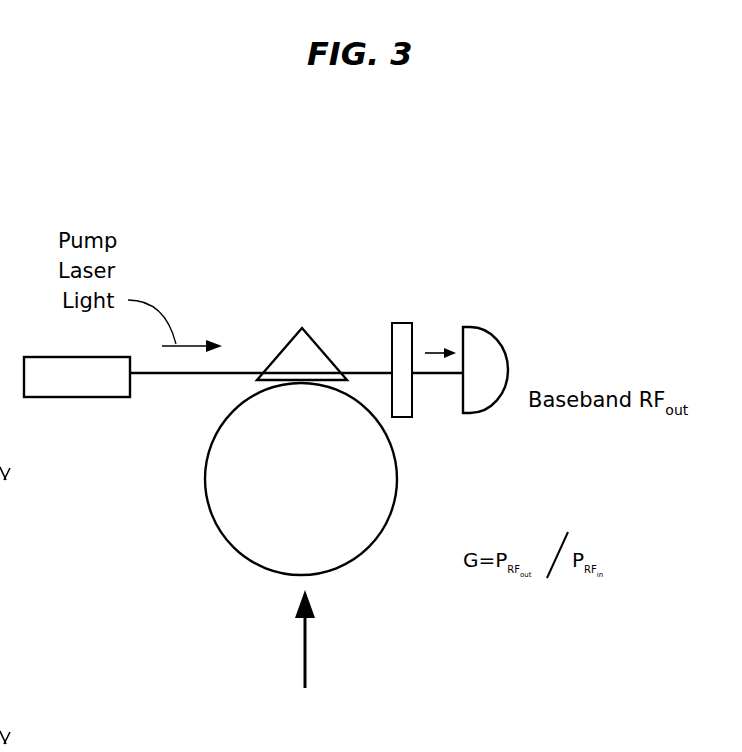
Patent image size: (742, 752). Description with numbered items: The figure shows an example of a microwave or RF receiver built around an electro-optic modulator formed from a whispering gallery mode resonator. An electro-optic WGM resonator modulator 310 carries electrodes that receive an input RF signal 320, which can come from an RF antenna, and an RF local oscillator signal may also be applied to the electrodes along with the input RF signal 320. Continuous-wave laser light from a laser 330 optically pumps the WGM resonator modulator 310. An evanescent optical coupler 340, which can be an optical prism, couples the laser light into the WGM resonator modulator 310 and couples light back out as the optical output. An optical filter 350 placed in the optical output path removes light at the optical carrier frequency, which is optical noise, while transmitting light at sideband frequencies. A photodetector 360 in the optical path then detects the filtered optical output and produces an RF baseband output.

The electro-optic WGM resonator modulator 310 is at (288, 542).
The input RF signal 320 is at (302, 645).
The laser 330 is at (78, 397).
The evanescent optical coupler 340 is at (282, 348).
The optical filter 350 is at (418, 327).
The photodetector 360 is at (512, 358).